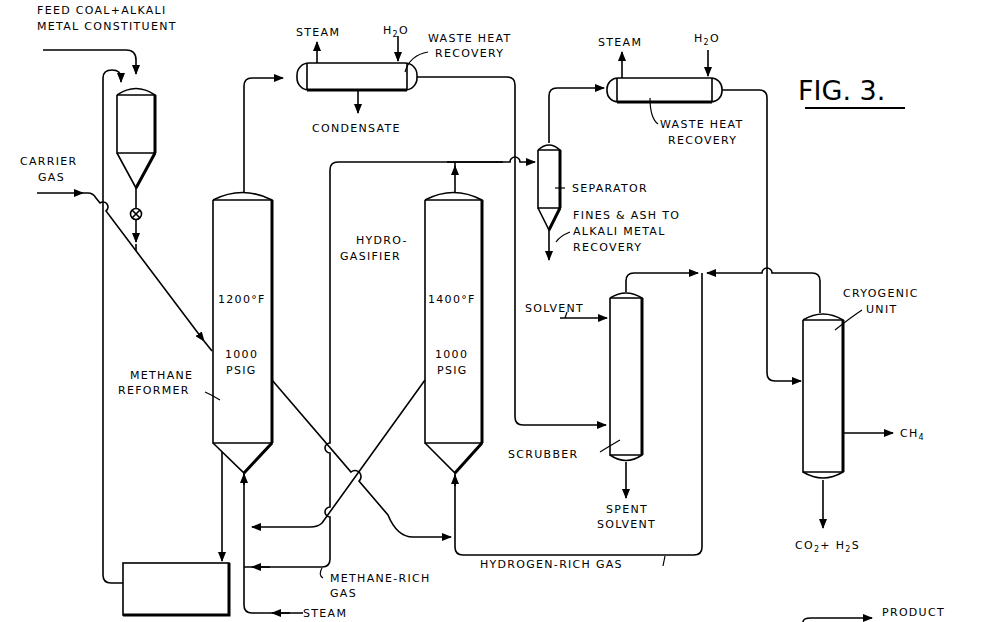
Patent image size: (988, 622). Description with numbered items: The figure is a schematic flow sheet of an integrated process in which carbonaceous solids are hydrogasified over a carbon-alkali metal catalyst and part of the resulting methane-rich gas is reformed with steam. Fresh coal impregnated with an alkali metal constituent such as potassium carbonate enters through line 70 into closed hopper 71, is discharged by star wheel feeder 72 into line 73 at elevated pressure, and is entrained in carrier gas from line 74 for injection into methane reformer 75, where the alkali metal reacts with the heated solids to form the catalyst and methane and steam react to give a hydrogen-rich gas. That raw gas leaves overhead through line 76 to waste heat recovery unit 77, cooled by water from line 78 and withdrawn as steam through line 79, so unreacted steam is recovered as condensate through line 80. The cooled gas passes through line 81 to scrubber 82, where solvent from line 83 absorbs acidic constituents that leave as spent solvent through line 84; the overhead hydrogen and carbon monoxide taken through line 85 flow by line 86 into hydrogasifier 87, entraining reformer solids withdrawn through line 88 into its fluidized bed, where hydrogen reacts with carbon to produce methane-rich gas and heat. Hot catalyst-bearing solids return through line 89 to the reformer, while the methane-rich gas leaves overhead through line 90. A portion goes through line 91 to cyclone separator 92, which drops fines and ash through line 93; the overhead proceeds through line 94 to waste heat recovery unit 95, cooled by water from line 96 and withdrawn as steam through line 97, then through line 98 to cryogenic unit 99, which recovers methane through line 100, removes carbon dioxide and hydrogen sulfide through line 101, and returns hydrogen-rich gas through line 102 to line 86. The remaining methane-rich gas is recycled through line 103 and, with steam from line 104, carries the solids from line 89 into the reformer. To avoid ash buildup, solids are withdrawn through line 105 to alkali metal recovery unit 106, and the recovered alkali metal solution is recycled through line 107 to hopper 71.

The line 70 is at (140, 64).
The hopper 71 is at (142, 110).
The star wheel feeder 72 is at (145, 210).
The line 73 is at (141, 235).
The line 74 is at (88, 200).
The methane reformer 75 is at (253, 247).
The line 76 is at (243, 158).
The waste heat recovery unit 77 is at (317, 82).
The line 78 is at (397, 50).
The line 79 is at (316, 58).
The line 80 is at (359, 98).
The line 81 is at (480, 80).
The scrubber 82 is at (620, 371).
The line 83 is at (576, 320).
The line 84 is at (630, 478).
The line 85 is at (675, 274).
The line 86 is at (704, 410).
The hydrogasifier 87 is at (467, 247).
The line 88 is at (378, 505).
The line 89 is at (392, 426).
The line 90 is at (452, 183).
The line 91 is at (489, 162).
The cyclone separator 92 is at (560, 165).
The line 93 is at (549, 236).
The line 94 is at (551, 115).
The waste heat recovery unit 95 is at (628, 92).
The line 96 is at (712, 62).
The line 97 is at (624, 70).
The line 98 is at (767, 181).
The cryogenic unit 99 is at (803, 413).
The line 100 is at (858, 432).
The line 101 is at (826, 500).
The line 102 is at (820, 270).
The line 103 is at (330, 210).
The line 104 is at (248, 592).
The line 105 is at (222, 476).
The alkali metal recovery unit 106 is at (178, 563).
The line 107 is at (103, 362).